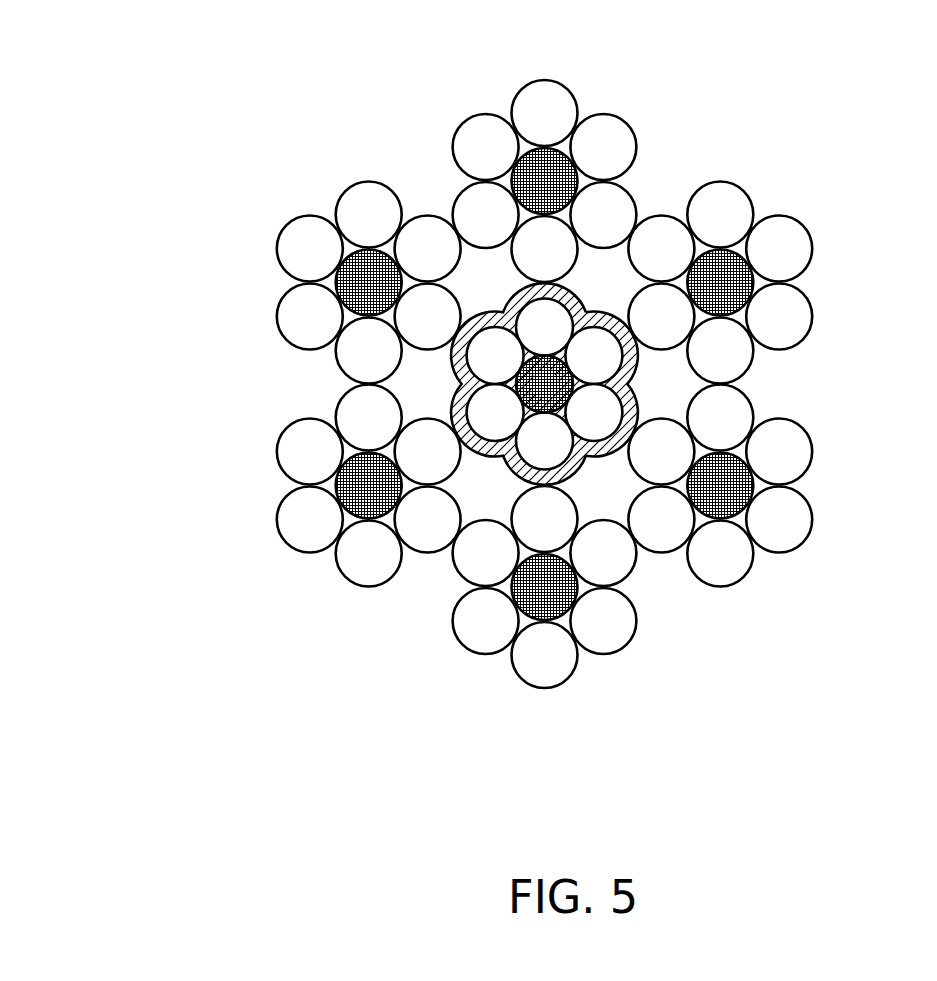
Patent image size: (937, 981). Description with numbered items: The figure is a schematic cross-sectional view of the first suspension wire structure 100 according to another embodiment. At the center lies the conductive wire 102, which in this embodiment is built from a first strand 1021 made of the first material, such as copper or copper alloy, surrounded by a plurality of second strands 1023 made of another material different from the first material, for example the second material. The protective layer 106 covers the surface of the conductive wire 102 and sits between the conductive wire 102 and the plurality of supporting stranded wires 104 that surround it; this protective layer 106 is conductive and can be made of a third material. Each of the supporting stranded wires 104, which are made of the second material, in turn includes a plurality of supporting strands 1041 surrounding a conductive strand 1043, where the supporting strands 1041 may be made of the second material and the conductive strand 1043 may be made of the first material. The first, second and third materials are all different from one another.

The first suspension wire structure 100 is at (230, 63).
The conductive wire 102 is at (160, 368).
The first strand 1021 is at (515, 395).
The second strands 1023 is at (543, 450).
The supporting stranded wires 104 is at (160, 233).
The supporting strands 1041 is at (312, 250).
The conductive strand 1043 is at (340, 294).
The protective layer 106 is at (620, 385).